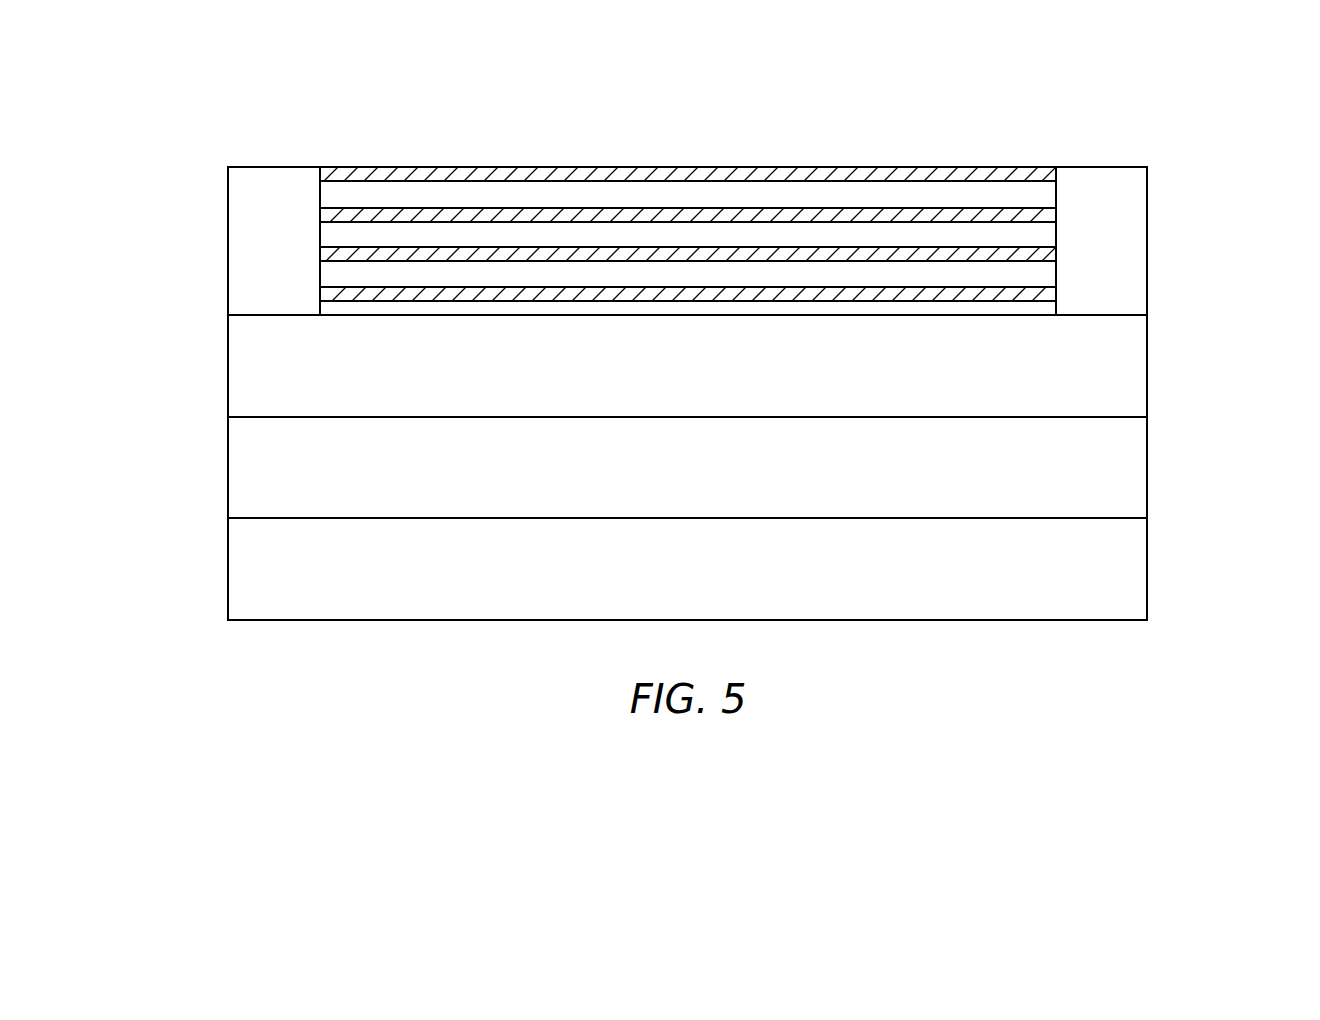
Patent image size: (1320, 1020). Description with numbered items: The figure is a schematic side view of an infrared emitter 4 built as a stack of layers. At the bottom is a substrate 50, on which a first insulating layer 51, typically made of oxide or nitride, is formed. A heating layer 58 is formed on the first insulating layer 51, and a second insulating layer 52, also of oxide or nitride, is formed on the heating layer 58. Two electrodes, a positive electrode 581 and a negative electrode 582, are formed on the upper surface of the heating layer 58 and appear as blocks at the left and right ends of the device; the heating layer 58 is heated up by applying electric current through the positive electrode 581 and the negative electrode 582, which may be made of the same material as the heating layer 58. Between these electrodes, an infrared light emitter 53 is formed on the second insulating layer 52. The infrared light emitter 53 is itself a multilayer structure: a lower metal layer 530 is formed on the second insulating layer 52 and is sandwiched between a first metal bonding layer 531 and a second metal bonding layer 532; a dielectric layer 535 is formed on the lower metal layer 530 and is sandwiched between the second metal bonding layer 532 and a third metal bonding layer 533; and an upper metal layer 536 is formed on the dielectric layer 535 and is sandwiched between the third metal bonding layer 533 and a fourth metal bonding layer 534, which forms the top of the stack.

The infrared emitter 4 is at (1164, 98).
The substrate 50 is at (1138, 569).
The first insulating layer 51 is at (1138, 475).
The second insulating layer 52 is at (357, 303).
The infrared light emitter 53 is at (866, 155).
The heating layer 58 is at (1138, 367).
The lower metal layer 530 is at (1045, 273).
The first metal bonding layer 531 is at (1058, 292).
The second metal bonding layer 532 is at (1058, 252).
The third metal bonding layer 533 is at (1058, 212).
The fourth metal bonding layer 534 is at (1057, 178).
The dielectric layer 535 is at (1045, 233).
The upper metal layer 536 is at (1045, 193).
The positive electrode 581 is at (242, 242).
The negative electrode 582 is at (1133, 203).